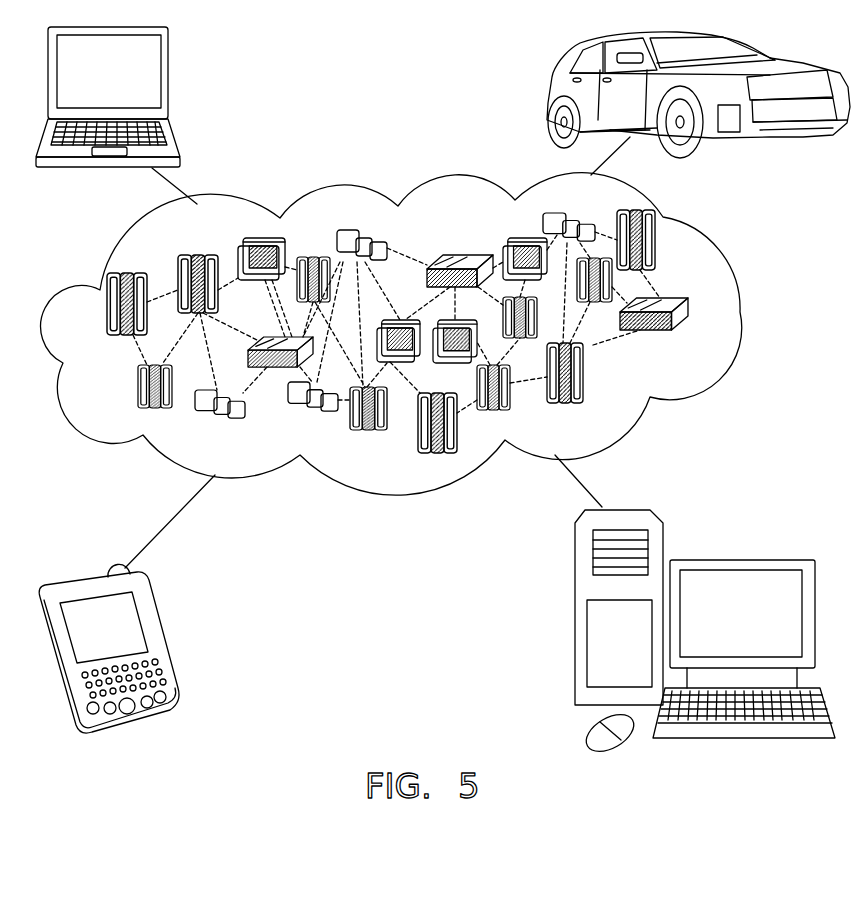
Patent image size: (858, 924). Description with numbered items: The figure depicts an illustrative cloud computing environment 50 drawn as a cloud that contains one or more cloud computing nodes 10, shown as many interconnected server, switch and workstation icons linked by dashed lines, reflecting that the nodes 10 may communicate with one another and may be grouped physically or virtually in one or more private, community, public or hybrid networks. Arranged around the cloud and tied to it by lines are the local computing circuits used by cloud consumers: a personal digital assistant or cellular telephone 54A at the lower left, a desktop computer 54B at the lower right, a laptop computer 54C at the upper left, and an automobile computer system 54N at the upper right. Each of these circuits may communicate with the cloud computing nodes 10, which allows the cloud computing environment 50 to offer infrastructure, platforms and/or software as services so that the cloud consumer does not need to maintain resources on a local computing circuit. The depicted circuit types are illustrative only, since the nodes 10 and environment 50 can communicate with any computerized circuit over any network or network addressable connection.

The cloud computing environment 50 is at (414, 334).
The cloud computing node 10 is at (697, 337).
The personal digital assistant or cellular telephone 54A is at (132, 648).
The desktop computer 54B is at (705, 634).
The laptop computer 54C is at (133, 97).
The automobile computer system 54N is at (666, 95).